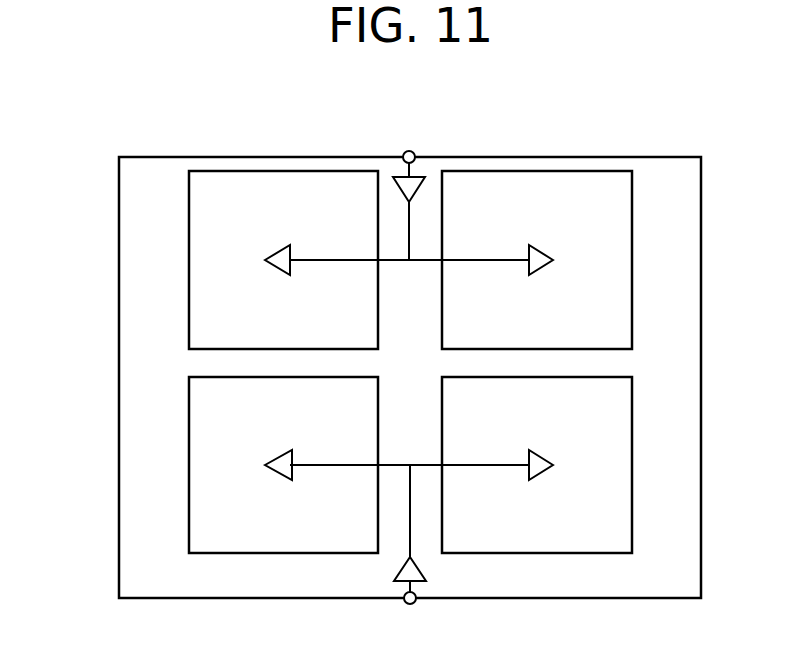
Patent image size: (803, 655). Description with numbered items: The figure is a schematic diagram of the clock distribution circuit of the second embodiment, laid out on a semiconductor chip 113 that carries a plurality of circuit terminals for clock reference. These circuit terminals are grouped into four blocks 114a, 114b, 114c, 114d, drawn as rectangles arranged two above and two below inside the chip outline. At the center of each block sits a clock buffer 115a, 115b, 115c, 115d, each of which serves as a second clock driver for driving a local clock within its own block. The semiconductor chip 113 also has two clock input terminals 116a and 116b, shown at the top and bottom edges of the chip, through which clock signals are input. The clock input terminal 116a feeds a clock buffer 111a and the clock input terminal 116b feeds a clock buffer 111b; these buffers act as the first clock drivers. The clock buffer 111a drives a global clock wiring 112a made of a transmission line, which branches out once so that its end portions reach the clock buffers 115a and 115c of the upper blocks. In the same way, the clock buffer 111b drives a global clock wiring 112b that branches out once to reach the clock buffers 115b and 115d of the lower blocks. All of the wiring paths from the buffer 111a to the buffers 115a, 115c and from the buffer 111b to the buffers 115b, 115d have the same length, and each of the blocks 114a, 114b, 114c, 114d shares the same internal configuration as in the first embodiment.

The semiconductor chip 113 is at (143, 516).
The block 114a is at (208, 287).
The block 114b is at (207, 494).
The block 114c is at (620, 313).
The block 114d is at (621, 517).
The global clock wiring 112a is at (407, 263).
The global clock wiring 112b is at (401, 463).
The clock buffer 115a is at (287, 258).
The clock buffer 115b is at (289, 463).
The clock buffer 115c is at (539, 259).
The clock buffer 115d is at (539, 464).
The clock buffer 111a is at (420, 177).
The clock buffer 111b is at (427, 575).
The clock input terminal 116a is at (404, 152).
The clock input terminal 116b is at (394, 589).